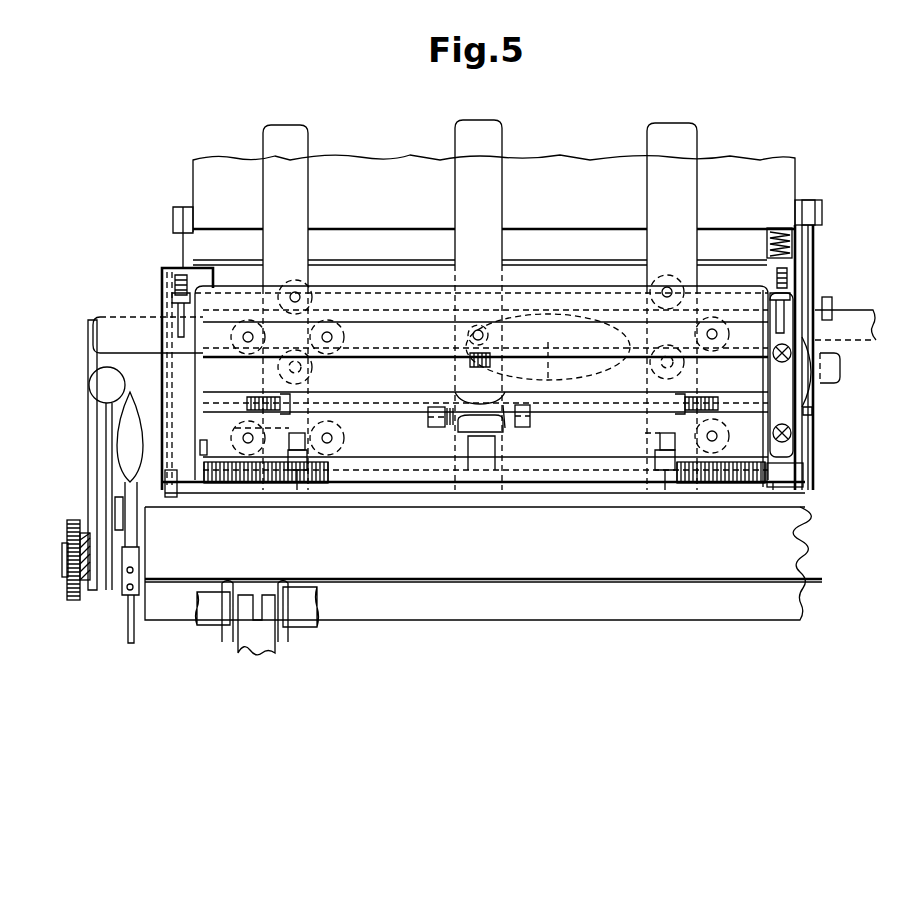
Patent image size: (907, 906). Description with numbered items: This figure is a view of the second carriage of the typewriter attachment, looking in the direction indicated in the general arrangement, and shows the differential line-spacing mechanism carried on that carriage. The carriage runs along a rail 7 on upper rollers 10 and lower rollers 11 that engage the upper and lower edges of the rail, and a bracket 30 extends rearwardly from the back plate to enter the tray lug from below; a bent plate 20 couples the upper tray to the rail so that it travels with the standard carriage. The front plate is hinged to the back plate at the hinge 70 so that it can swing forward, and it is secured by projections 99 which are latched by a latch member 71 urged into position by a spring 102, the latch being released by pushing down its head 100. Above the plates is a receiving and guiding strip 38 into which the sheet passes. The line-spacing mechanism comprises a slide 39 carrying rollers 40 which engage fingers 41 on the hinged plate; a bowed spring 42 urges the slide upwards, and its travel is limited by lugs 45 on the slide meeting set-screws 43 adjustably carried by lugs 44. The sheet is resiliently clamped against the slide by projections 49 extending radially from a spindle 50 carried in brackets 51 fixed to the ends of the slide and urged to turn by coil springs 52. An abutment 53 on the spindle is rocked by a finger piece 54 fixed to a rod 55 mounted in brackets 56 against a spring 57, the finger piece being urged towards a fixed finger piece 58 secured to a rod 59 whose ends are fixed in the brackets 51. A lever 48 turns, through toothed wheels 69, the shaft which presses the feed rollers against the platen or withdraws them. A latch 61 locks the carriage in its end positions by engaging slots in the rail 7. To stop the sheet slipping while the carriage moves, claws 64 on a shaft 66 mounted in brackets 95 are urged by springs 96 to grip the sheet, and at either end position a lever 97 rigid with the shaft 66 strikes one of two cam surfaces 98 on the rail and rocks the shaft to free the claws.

The rail 7 is at (840, 320).
The upper rollers 10 is at (290, 282).
The lower rollers 11 is at (278, 368).
The bent plate 20 is at (796, 185).
The bracket 30 is at (815, 336).
The receiving and guiding strip 38 is at (502, 183).
The slide 39 is at (358, 285).
The rollers 40 is at (231, 338).
The fingers 41 is at (308, 258).
The bowed spring 42 is at (548, 347).
The set-screws 43 is at (175, 284).
The lugs 44 is at (172, 297).
The lugs 45 is at (177, 497).
The lever 48 is at (112, 473).
The projections 49 is at (296, 486).
The spindle 50 is at (597, 495).
The brackets 51 is at (200, 447).
The coil springs 52 is at (250, 486).
The abutment 53 is at (494, 463).
The finger piece 54 is at (466, 433).
The rod 55 is at (505, 416).
The brackets 56 is at (432, 427).
The spring 57 is at (450, 428).
The fixed finger piece 58 is at (461, 394).
The rod 59 is at (370, 392).
The latch 61 is at (841, 371).
The claws 64 is at (443, 435).
The shaft 66 is at (611, 412).
The toothed wheels 69 is at (67, 593).
The hinge 70 is at (162, 372).
The latch member 71 is at (796, 233).
The brackets 95 is at (255, 397).
The springs 96 is at (290, 396).
The lever 97 is at (470, 362).
The cam surfaces 98 is at (468, 335).
The projections 99 is at (783, 363).
The head 100 is at (781, 224).
The spring 102 is at (770, 245).